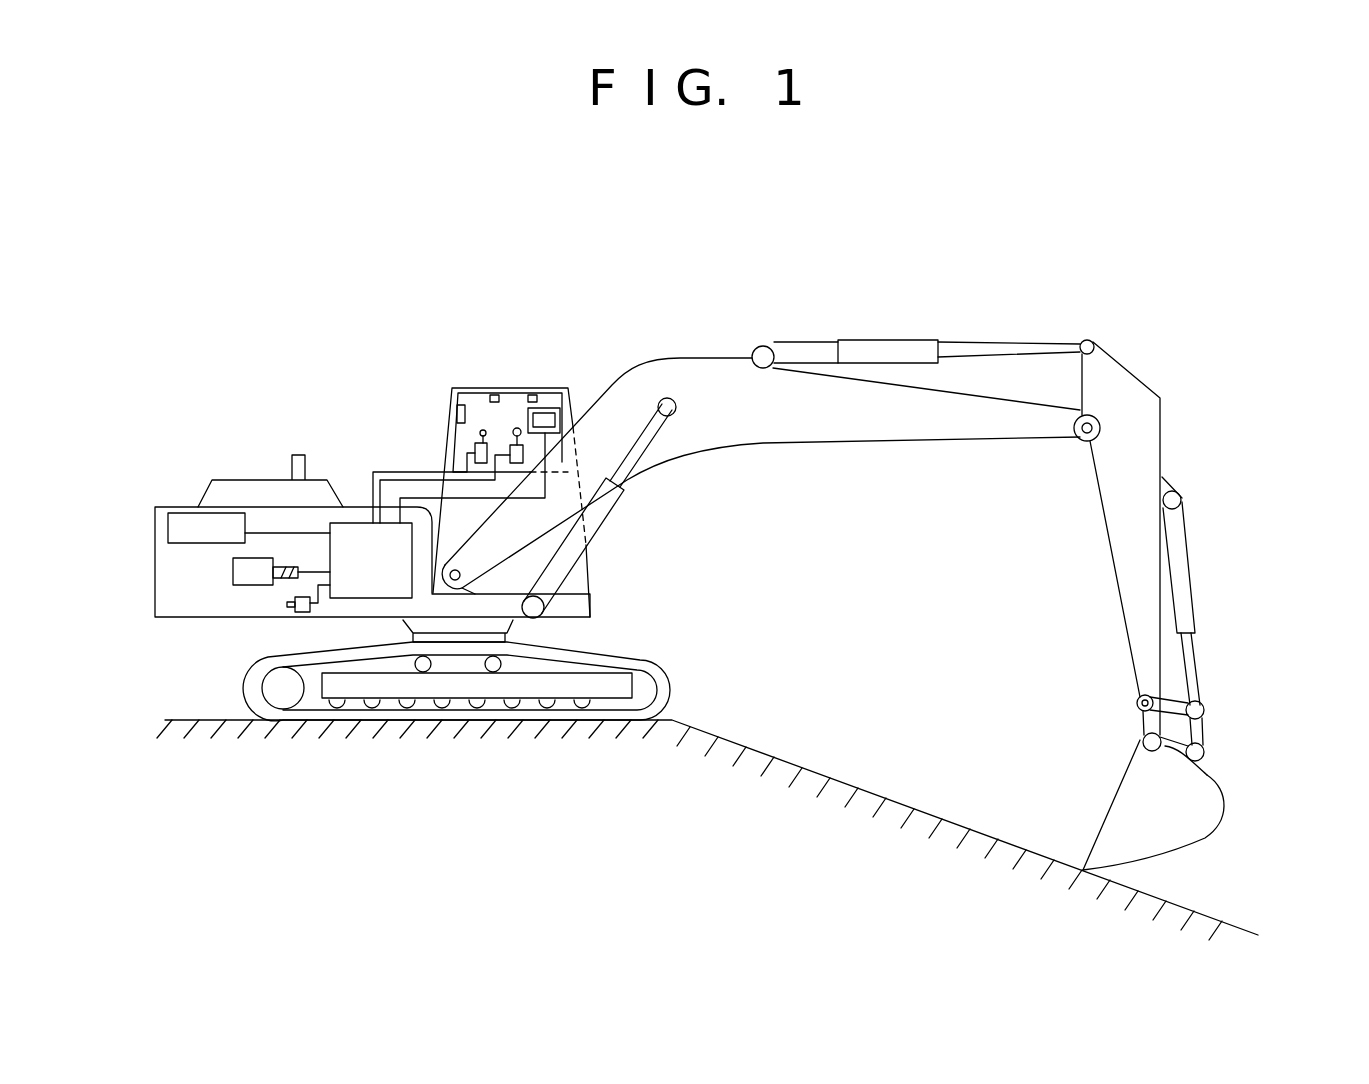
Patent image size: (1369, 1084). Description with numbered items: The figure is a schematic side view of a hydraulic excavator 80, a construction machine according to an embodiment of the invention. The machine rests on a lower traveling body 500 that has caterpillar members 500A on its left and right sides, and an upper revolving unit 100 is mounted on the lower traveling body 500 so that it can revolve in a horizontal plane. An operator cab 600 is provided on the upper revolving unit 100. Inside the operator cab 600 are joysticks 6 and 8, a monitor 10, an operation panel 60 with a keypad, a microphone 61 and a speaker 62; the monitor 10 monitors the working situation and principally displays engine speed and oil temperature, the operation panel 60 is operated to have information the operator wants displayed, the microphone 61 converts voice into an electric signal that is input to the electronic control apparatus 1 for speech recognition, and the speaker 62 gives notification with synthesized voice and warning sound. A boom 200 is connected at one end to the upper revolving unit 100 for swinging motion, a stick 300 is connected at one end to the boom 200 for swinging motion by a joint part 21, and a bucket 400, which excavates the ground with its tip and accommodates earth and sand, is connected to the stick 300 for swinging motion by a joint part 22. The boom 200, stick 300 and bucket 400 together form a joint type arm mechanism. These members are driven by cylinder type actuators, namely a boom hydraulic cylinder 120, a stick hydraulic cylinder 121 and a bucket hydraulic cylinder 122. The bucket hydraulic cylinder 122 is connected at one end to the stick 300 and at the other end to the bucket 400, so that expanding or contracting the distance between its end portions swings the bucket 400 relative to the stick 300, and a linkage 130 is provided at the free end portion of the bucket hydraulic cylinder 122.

The electronic control apparatus 1 is at (350, 523).
The joystick 6 is at (484, 431).
The joystick 8 is at (517, 428).
The monitor 10 is at (548, 410).
The joint part 21 is at (1080, 440).
The joint part 22 is at (1137, 707).
The operation panel 60 is at (460, 410).
The microphone 61 is at (532, 398).
The speaker 62 is at (493, 395).
The hydraulic excavator 80 is at (565, 807).
The upper revolving unit 100 is at (367, 523).
The boom hydraulic cylinder 120 is at (605, 510).
The stick hydraulic cylinder 121 is at (841, 348).
The bucket hydraulic cylinder 122 is at (1185, 570).
The linkage 130 is at (1198, 733).
The boom 200 is at (682, 367).
The stick 300 is at (1148, 458).
The bucket 400 is at (1193, 850).
The lower traveling body 500 is at (257, 678).
The caterpillar member 500A is at (330, 722).
The operator cab 600 is at (462, 389).